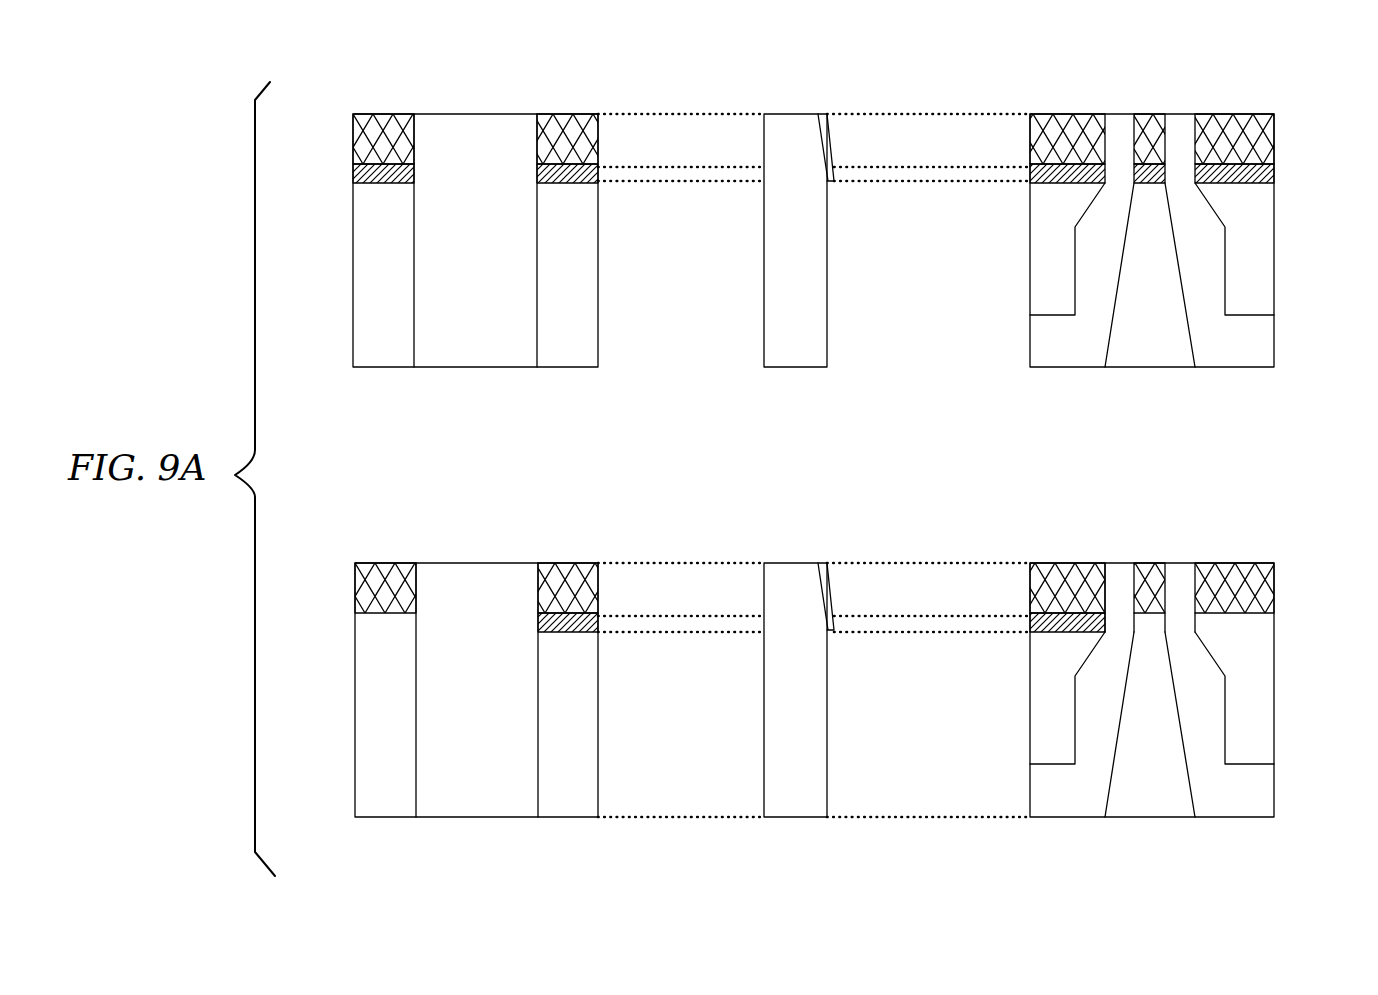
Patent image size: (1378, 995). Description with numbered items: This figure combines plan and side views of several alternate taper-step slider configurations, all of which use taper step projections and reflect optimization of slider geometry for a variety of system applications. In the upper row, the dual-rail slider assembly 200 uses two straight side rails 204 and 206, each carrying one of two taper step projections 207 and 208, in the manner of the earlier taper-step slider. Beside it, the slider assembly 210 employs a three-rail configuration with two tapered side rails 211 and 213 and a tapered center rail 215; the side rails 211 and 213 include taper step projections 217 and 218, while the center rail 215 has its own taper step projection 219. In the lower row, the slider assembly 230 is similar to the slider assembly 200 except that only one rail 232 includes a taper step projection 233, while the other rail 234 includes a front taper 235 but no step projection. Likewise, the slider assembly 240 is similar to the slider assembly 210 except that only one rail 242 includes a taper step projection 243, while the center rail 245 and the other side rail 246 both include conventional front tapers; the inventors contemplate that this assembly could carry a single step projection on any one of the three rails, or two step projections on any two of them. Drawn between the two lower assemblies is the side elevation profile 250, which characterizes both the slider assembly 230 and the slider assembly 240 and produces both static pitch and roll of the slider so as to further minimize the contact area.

The dual-rail slider assembly 200 is at (489, 95).
The straight side rail 204 is at (391, 327).
The straight side rail 206 is at (571, 327).
The taper step projection 207 is at (365, 133).
The taper step projection 208 is at (585, 137).
The slider assembly 210 is at (1200, 92).
The tapered side rail 211 is at (1048, 228).
The tapered side rail 213 is at (1253, 228).
The tapered center rail 215 is at (1152, 327).
The taper step projection 217 is at (1045, 133).
The taper step projection 218 is at (1262, 133).
The taper step projection 219 is at (1155, 116).
The slider assembly 230 is at (489, 545).
The rail 232 is at (571, 777).
The taper step projection 233 is at (598, 617).
The rail 234 is at (391, 777).
The front taper 235 is at (365, 590).
The slider assembly 240 is at (1197, 543).
The rail 242 is at (1048, 678).
The taper step projection 243 is at (1030, 620).
The center rail 245 is at (1152, 777).
The side rail 246 is at (1253, 672).
The side elevation profile 250 is at (807, 543).